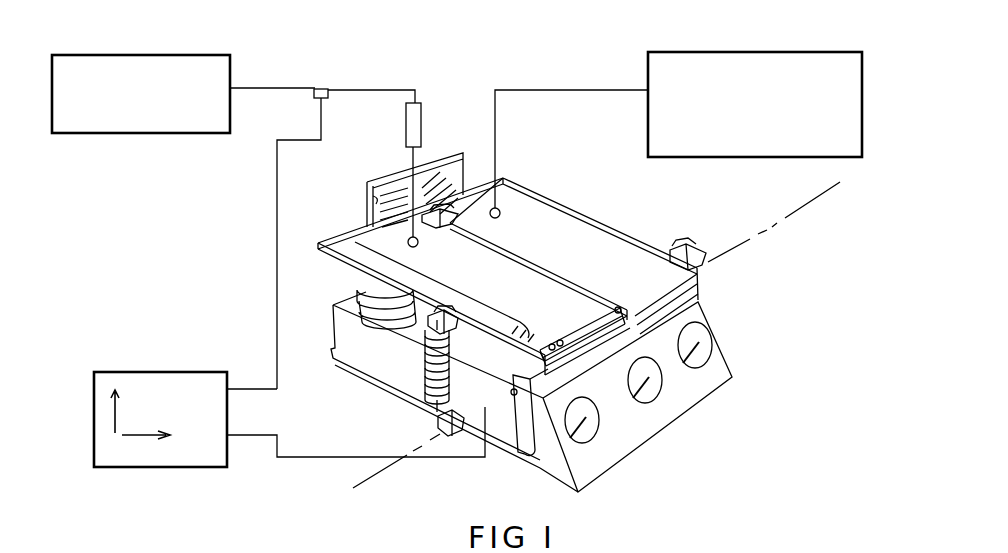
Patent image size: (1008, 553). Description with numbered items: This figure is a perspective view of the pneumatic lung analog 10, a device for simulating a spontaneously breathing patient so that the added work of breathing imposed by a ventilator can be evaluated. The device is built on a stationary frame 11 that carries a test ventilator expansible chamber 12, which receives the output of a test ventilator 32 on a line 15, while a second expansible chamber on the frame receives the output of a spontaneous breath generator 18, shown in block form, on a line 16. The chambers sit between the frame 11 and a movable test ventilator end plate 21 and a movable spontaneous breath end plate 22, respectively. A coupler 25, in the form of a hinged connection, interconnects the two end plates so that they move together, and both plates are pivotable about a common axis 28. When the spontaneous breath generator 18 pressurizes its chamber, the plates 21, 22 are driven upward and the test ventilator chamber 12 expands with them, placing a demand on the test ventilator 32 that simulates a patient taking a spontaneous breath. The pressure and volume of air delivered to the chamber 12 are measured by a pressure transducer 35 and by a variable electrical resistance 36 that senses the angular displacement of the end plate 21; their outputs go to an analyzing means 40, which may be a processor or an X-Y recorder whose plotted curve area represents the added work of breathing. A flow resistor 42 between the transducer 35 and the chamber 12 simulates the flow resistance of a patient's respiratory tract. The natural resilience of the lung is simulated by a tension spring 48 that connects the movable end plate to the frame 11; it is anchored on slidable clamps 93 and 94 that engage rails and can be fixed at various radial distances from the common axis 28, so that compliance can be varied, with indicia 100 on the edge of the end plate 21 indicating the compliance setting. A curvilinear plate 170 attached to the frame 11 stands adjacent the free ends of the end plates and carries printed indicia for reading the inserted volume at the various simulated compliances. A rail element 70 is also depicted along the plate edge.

The pneumatic lung analog 10 is at (674, 212).
The frame 11 is at (531, 392).
The test ventilator expansible chamber 12 is at (375, 296).
The line 15 is at (413, 156).
The line 16 is at (497, 122).
The spontaneous breath generator 18 is at (731, 55).
The movable test ventilator end plate 21 is at (474, 276).
The movable spontaneous breath end plate 22 is at (578, 256).
The coupler 25 is at (468, 197).
The common axis 28 is at (785, 218).
The test ventilator 32 is at (203, 55).
The pressure transducer 35 is at (319, 89).
The variable electrical resistance 36 is at (508, 440).
The analyzing means 40 is at (154, 372).
The flow resistor 42 is at (417, 120).
The tension spring 48 is at (428, 390).
The rail 70 is at (555, 332).
The clamp 93 is at (432, 322).
The clamp 94 is at (445, 424).
The indicia 100 is at (432, 286).
The curvilinear plate 170 is at (378, 198).